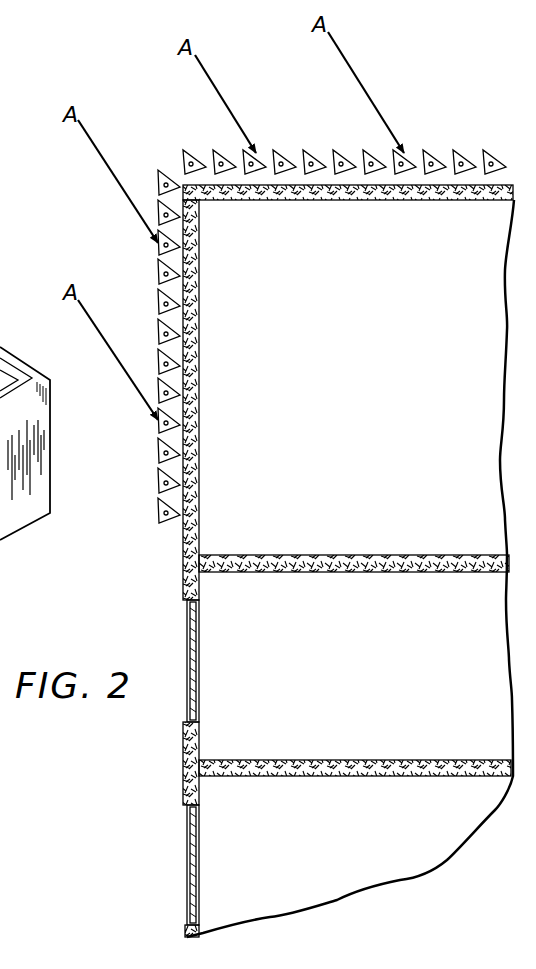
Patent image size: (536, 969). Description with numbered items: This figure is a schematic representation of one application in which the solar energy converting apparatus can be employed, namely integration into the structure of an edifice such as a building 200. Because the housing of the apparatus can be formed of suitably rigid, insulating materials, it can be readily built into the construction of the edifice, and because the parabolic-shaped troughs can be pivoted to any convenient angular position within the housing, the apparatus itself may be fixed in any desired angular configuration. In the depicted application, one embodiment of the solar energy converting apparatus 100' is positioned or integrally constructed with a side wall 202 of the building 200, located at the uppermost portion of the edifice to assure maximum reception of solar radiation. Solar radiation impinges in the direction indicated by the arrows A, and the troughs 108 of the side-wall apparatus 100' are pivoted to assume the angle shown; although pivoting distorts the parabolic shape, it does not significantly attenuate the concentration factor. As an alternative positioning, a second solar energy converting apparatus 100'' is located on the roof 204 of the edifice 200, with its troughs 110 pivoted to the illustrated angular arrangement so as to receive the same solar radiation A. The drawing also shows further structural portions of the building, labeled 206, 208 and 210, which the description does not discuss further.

The solar energy converting apparatus 100' is at (134, 360).
The solar energy converting apparatus 100'' is at (344, 126).
The parabolic-shaped troughs 108 is at (163, 375).
The parabolic-shaped troughs 110 is at (288, 150).
The building 200 is at (305, 249).
The side wall 202 is at (200, 445).
The roof 204 is at (396, 201).
The panel 206 is at (200, 672).
The intermediate horizontal member 208 is at (362, 556).
The lower horizontal member 210 is at (341, 760).